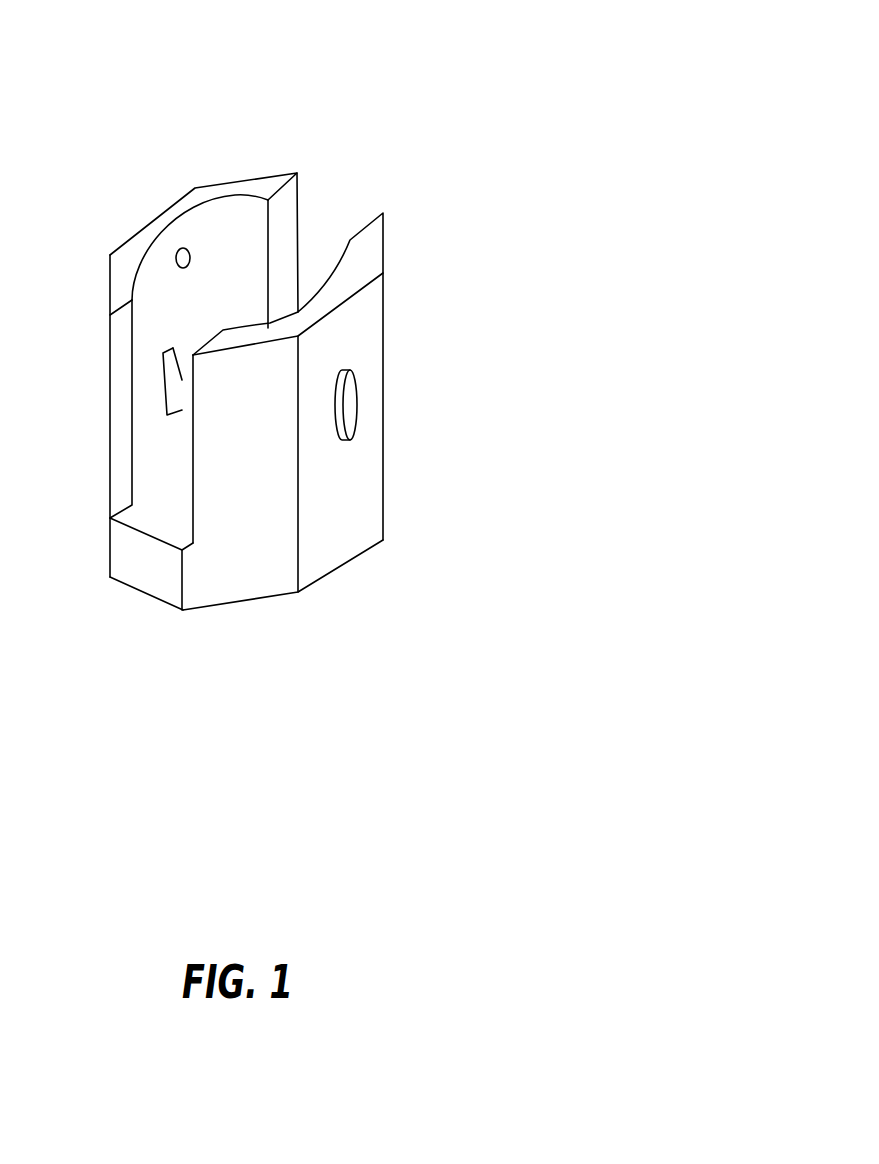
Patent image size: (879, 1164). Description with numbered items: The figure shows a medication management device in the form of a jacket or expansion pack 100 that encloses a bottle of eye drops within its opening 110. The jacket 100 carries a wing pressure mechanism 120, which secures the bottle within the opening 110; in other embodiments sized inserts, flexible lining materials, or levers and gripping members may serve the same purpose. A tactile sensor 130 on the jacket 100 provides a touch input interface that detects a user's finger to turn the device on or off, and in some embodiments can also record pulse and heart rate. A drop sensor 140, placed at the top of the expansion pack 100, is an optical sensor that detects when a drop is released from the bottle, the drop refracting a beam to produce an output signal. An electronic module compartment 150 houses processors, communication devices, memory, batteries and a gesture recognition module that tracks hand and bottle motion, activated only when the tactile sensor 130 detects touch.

The jacket or expansion pack 100 is at (446, 71).
The opening 110 is at (315, 217).
The wing pressure mechanism 120 is at (142, 382).
The tactile sensor 130 is at (357, 400).
The drop sensor 140 is at (202, 235).
The electronic module compartment 150 is at (160, 573).